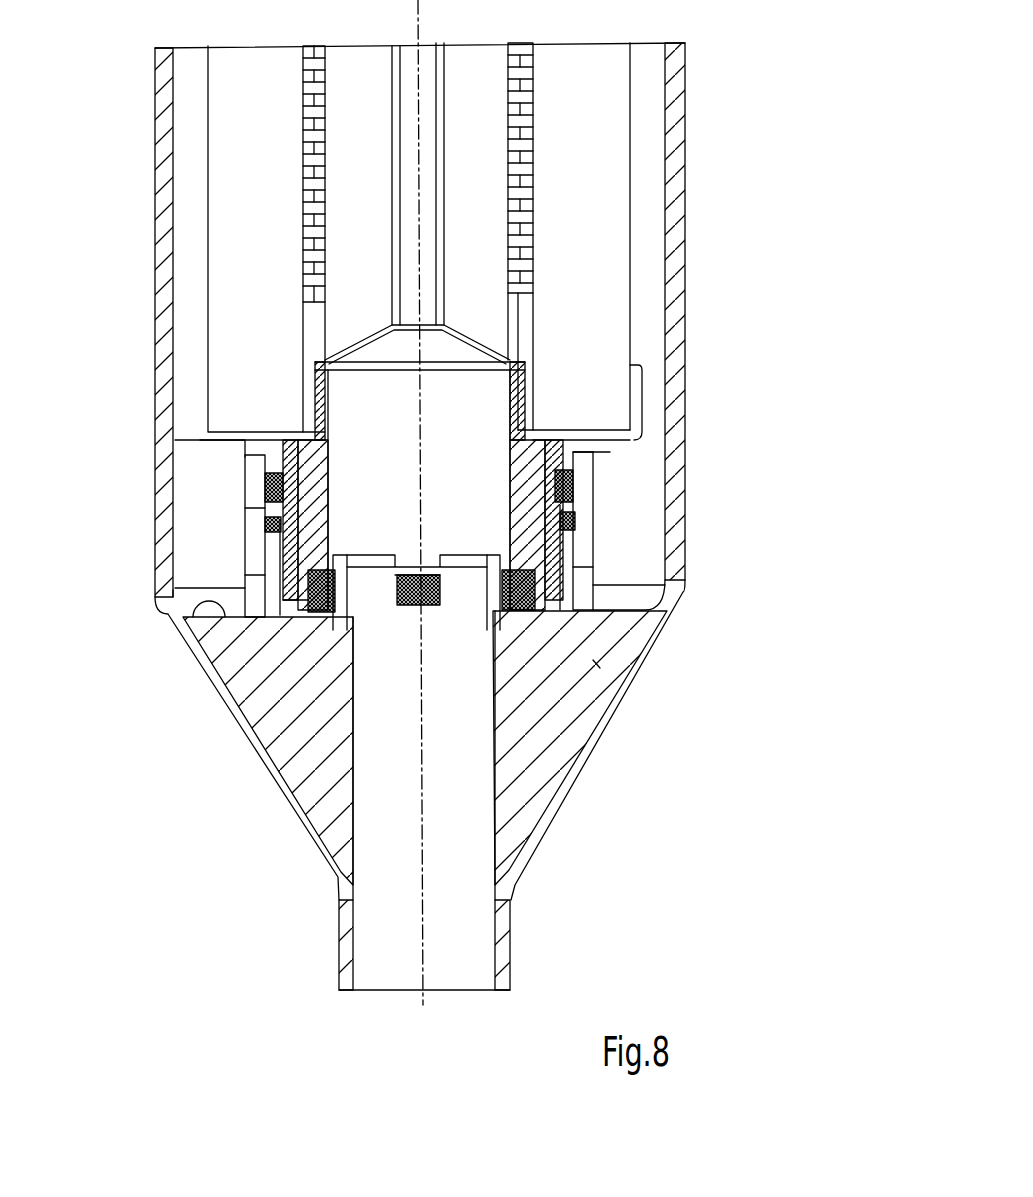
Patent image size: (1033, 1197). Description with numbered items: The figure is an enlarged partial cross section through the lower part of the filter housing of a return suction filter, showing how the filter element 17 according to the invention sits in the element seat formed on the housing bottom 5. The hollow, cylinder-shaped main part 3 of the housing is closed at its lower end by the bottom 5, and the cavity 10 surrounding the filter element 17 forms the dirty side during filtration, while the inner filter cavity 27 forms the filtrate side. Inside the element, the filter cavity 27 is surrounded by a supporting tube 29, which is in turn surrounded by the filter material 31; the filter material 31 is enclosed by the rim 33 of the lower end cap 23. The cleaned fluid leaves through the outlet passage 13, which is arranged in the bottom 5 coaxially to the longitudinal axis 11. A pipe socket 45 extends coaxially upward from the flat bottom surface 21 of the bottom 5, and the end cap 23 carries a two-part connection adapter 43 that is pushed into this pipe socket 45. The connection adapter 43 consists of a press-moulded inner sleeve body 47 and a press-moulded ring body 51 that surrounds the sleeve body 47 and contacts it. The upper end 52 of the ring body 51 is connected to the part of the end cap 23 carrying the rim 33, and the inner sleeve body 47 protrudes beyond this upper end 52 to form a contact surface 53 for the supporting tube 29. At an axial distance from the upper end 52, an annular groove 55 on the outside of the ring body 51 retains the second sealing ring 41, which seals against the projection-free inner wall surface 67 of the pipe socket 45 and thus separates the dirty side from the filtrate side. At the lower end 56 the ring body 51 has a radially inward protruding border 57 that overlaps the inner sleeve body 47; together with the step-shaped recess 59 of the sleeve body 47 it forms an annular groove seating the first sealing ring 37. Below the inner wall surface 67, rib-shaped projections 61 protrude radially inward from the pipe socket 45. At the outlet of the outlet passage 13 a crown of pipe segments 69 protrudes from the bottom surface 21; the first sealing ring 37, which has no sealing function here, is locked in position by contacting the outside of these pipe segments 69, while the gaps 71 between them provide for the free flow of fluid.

The main part 3 is at (680, 95).
The housing bottom 5 is at (650, 640).
The cavity 10 is at (630, 457).
The longitudinal axis 11 is at (425, 995).
The outlet passage 13 is at (498, 860).
The filter element 17 is at (665, 190).
The flat bottom surface 21 is at (182, 608).
The lower end cap 23 is at (208, 448).
The inner filter cavity 27 is at (473, 278).
The supporting tube 29 is at (523, 325).
The filter material 31 is at (630, 140).
The rim 33 is at (205, 378).
The first sealing ring 37 is at (595, 567).
The second sealing ring 41 is at (245, 480).
The connection adapter 43 is at (245, 540).
The pipe socket 45 is at (585, 527).
The inner sleeve body 47 is at (328, 458).
The ring body 51 is at (245, 575).
The upper end 52 is at (597, 455).
The contact surface 53 is at (305, 410).
The annular groove 55 is at (510, 445).
The lower end 56 is at (593, 665).
The border 57 is at (330, 612).
The recess 59 is at (300, 615).
The projections 61 is at (508, 500).
The inner wall surface 67 is at (245, 508).
The pipe segments 69 is at (458, 558).
The gaps 71 is at (405, 612).